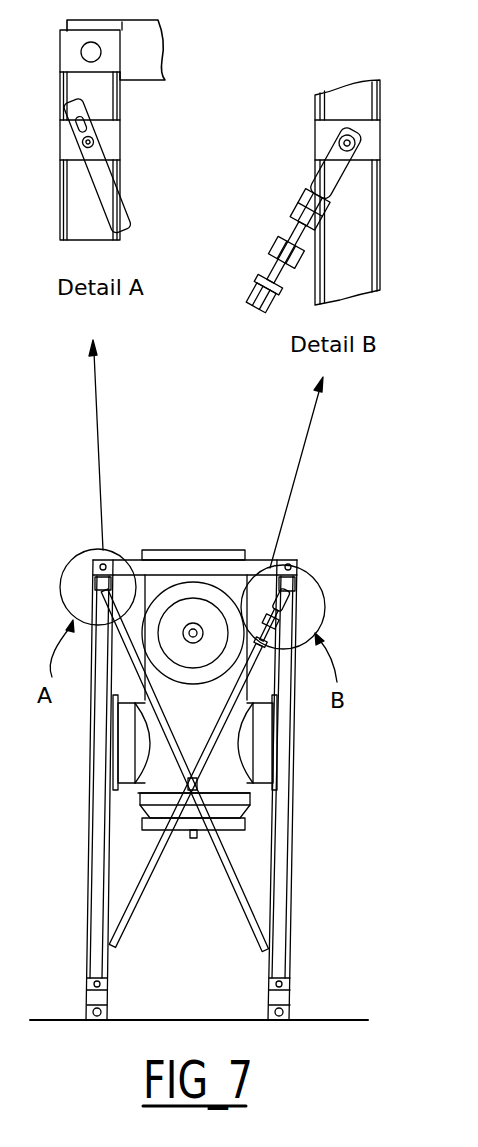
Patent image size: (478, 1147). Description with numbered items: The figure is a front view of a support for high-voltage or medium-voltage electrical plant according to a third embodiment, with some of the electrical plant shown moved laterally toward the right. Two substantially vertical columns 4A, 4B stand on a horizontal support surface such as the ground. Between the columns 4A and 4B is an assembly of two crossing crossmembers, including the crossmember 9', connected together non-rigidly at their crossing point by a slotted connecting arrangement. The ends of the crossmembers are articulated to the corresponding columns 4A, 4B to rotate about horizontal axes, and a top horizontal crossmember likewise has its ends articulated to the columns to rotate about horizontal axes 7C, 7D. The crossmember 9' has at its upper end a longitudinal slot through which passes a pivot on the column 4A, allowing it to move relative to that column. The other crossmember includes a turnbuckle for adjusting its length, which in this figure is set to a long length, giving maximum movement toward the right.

The column 4A is at (78, 208).
The column 4B is at (357, 238).
The crossmember 9' is at (166, 536).
The horizontal axis 7C is at (98, 560).
The horizontal axis 7D is at (263, 572).